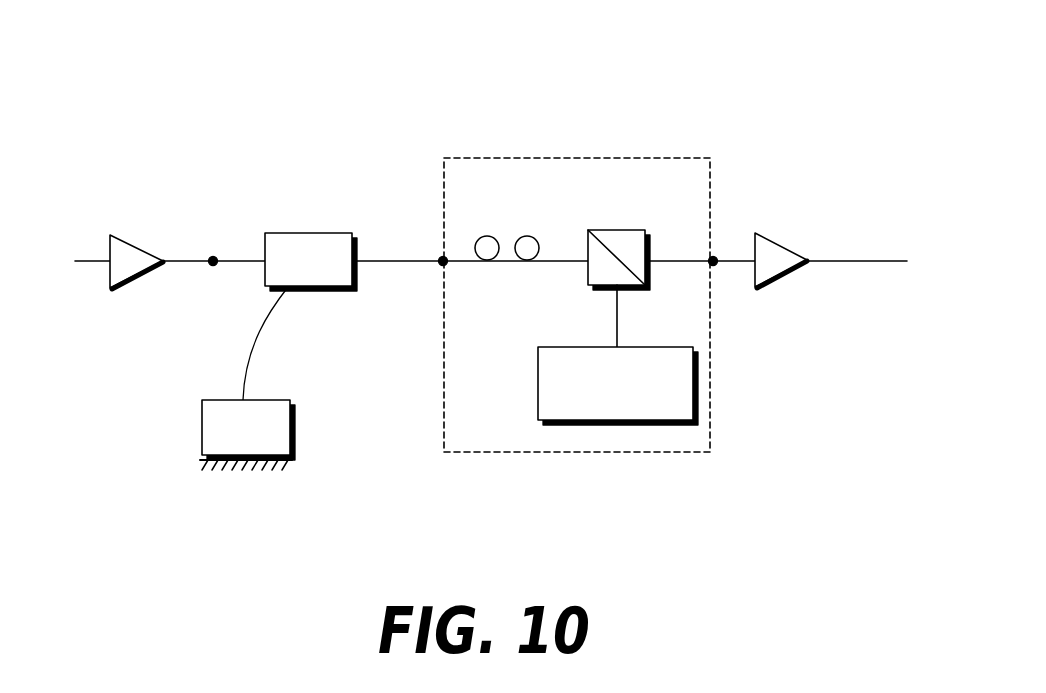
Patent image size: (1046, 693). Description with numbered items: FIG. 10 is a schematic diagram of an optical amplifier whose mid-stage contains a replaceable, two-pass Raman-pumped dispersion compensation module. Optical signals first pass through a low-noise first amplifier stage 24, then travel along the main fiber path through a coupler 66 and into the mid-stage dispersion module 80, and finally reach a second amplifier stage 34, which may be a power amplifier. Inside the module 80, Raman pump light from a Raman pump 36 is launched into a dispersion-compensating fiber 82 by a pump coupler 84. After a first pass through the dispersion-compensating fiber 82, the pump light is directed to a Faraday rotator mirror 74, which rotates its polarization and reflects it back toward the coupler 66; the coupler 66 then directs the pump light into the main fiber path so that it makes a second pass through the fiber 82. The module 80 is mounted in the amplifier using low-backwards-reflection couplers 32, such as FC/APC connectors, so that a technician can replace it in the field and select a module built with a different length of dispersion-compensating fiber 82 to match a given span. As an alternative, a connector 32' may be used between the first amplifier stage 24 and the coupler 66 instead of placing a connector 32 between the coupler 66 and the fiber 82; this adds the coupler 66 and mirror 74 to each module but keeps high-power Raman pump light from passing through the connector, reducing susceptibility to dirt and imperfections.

The first amplifier stage 24 is at (135, 242).
The connector 32' is at (182, 305).
The coupler 66 is at (308, 232).
The Faraday rotator mirror 74 is at (294, 458).
The low-backwards-reflection couplers 32 is at (575, 243).
The mid-stage dispersion module 80 is at (603, 157).
The dispersion-compensating fiber 82 is at (553, 225).
The pump coupler 84 is at (645, 273).
The Raman pump 36 is at (693, 397).
The second amplifier stage 34 is at (790, 243).